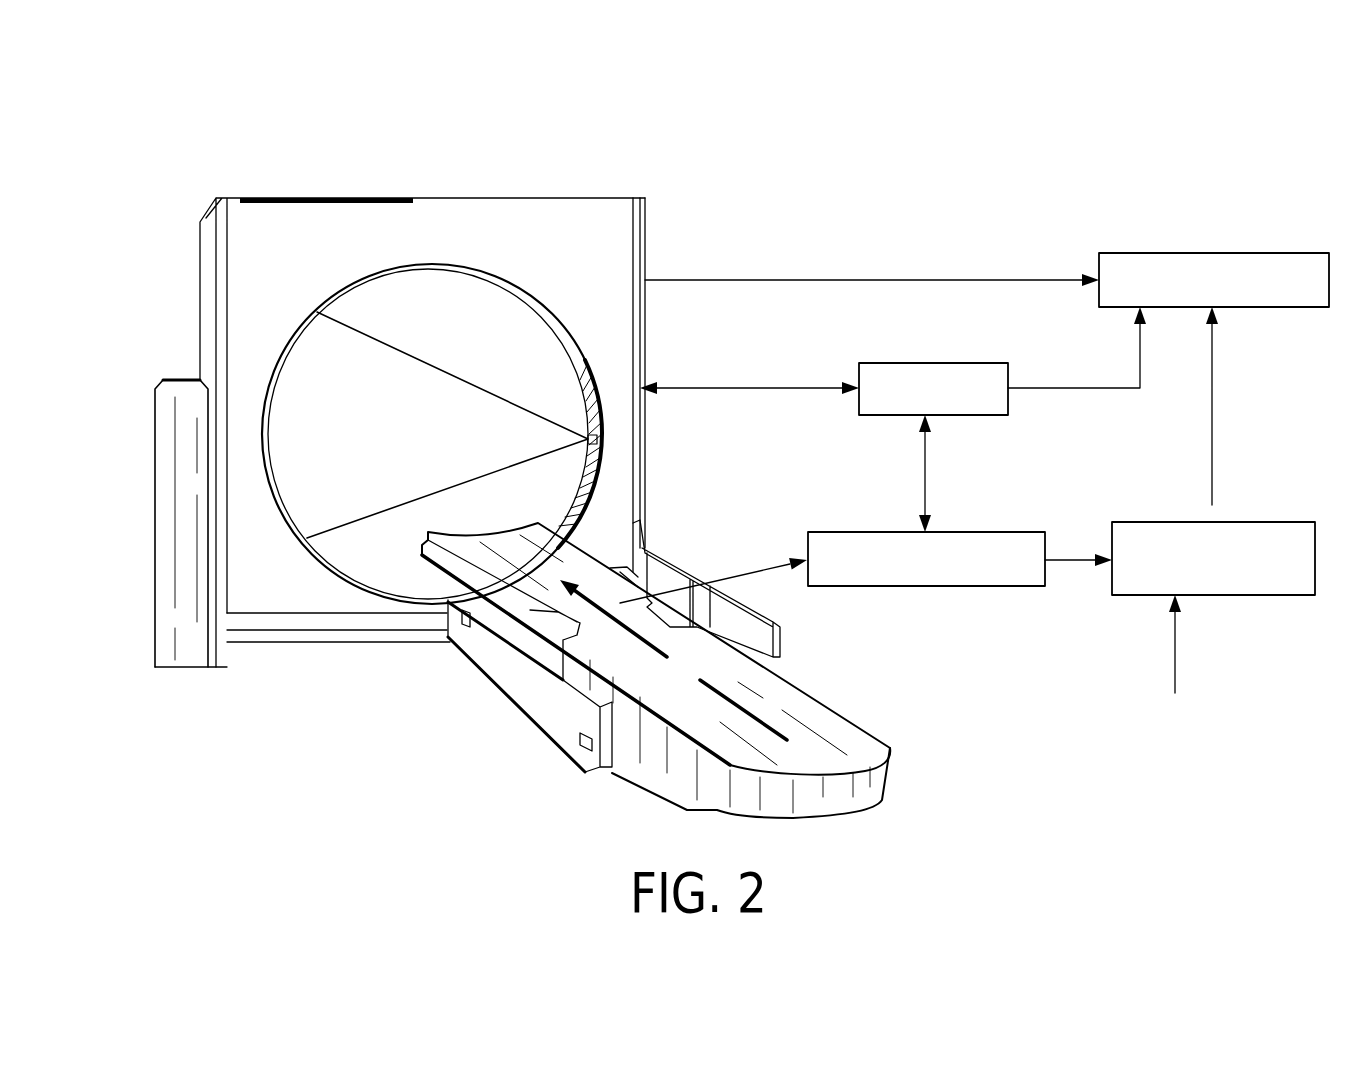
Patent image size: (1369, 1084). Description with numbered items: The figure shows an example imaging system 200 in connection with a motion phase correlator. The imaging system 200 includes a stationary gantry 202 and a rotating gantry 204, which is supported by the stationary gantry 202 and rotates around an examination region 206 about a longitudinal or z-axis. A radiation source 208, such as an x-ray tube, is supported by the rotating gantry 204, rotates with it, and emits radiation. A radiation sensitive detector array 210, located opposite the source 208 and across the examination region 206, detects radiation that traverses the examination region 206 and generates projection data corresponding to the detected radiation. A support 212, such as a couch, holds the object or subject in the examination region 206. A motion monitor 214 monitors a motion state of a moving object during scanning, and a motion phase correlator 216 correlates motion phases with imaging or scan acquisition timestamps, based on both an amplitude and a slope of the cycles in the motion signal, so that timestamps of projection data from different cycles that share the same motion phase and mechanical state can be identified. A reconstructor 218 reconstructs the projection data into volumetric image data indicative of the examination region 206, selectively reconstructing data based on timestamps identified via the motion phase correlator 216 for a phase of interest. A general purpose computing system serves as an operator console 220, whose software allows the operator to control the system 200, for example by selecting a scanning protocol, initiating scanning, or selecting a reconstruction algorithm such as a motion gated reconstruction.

The imaging system 200 is at (183, 128).
The stationary gantry 202 is at (351, 198).
The rotating gantry 204 is at (342, 288).
The examination region 206 is at (428, 434).
The radiation source 208 is at (587, 430).
The radiation sensitive detector array 210 is at (290, 353).
The support 212 is at (838, 732).
The motion monitor 214 is at (993, 587).
The motion phase correlator 216 is at (1262, 597).
The reconstructor 218 is at (1265, 253).
The operator console 220 is at (965, 363).